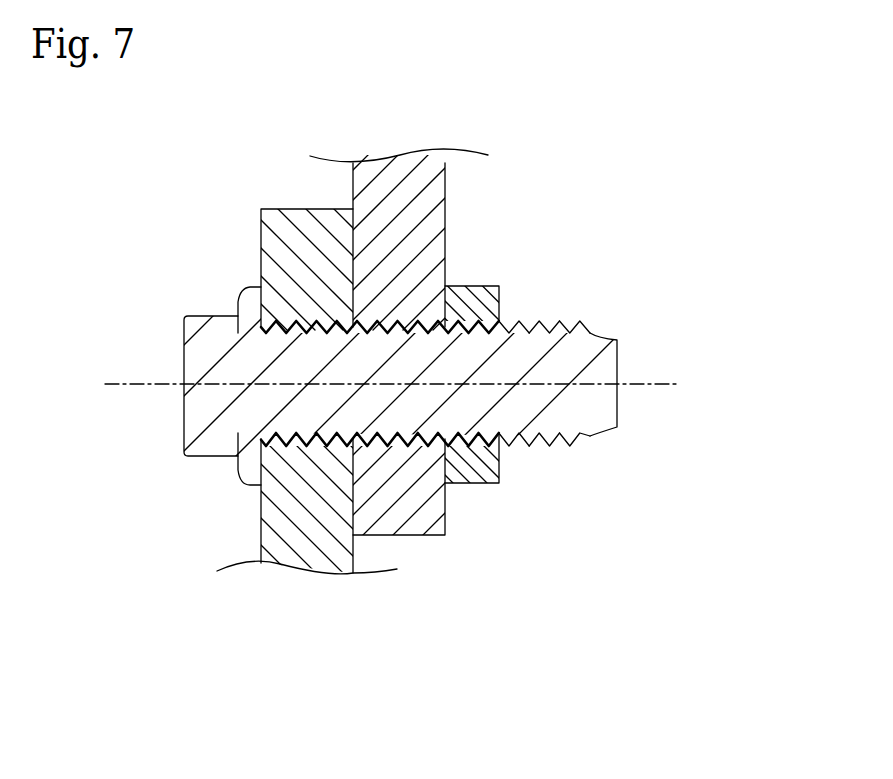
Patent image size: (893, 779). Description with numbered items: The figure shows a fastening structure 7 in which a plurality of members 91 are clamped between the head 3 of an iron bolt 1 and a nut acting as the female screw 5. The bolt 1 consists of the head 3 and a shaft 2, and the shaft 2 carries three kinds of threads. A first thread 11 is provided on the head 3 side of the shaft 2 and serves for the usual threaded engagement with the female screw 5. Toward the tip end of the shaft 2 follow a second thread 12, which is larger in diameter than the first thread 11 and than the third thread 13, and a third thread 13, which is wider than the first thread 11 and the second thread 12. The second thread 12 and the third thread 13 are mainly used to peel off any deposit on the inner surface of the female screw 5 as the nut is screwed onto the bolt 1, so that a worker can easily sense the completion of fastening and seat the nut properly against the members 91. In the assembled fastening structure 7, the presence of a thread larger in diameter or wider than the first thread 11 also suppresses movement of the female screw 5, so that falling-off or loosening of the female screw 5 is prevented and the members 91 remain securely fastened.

The bolt 1 is at (573, 510).
The shaft 2 is at (617, 407).
The head 3 is at (193, 420).
The female screw 5 is at (488, 485).
The fastening structure 7 is at (670, 280).
The first thread 11 is at (501, 327).
The second thread 12 is at (543, 317).
The third thread 13 is at (583, 320).
The members 91 is at (313, 557).